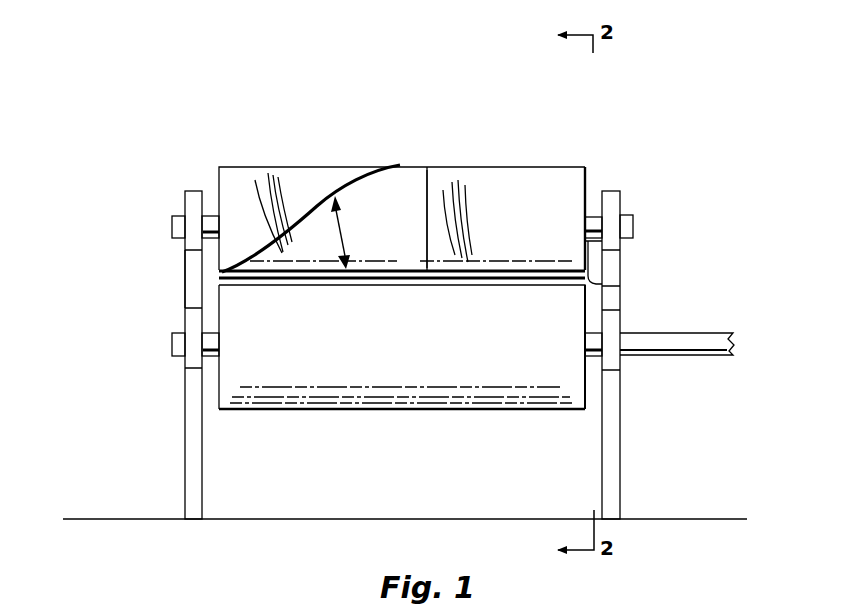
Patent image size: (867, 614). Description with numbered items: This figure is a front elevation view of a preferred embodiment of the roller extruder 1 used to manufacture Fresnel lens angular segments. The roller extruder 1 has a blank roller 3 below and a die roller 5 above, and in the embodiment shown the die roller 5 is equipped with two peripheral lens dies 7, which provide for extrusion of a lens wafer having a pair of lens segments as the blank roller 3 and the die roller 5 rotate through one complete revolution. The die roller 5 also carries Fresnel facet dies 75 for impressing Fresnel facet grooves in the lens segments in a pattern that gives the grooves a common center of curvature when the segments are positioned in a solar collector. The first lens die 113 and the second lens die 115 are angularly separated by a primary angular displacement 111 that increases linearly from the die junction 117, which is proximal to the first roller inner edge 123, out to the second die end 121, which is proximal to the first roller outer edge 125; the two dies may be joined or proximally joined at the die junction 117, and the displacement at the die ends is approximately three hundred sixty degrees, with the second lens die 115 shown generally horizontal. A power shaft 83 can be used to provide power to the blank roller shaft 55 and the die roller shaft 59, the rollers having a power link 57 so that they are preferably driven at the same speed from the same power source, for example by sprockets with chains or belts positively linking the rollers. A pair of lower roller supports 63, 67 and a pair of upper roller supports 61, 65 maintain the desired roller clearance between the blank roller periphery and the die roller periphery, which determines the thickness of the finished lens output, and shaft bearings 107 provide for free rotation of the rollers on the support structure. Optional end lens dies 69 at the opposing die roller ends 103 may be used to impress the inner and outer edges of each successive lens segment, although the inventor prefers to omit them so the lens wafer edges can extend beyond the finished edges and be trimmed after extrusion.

The roller extruder 1 is at (543, 167).
The blank roller 3 is at (340, 412).
The die roller 5 is at (252, 167).
The peripheral lens dies 7 is at (398, 167).
The blank roller shaft 55 is at (594, 370).
The power link 57 is at (612, 305).
The die roller shaft 59 is at (593, 222).
The upper roller support 61 is at (185, 293).
The lower roller support 63 is at (183, 463).
The upper roller support 65 is at (616, 267).
The lower roller support 67 is at (612, 458).
The end lens dies 69 is at (218, 175).
The Fresnel facet dies 75 is at (283, 195).
The power shaft 83 is at (678, 340).
The die roller ends 103 is at (219, 167).
The shaft bearings 107 is at (183, 328).
The primary angular displacement 111 is at (343, 235).
The first lens die 113 is at (380, 167).
The second lens die 115 is at (427, 167).
The die junction 117 is at (220, 275).
The second die end 121 is at (623, 287).
The first roller inner edge 123 is at (218, 183).
The first roller outer edge 125 is at (632, 237).